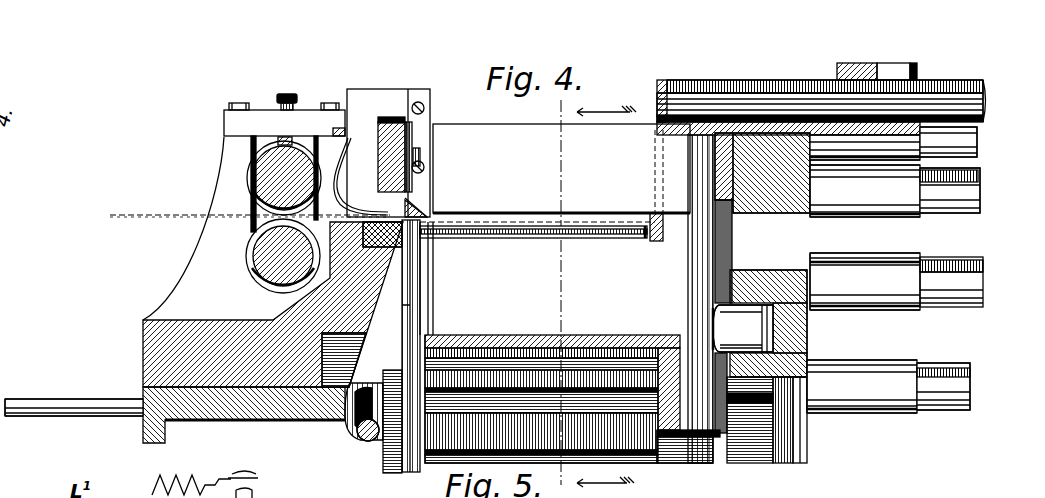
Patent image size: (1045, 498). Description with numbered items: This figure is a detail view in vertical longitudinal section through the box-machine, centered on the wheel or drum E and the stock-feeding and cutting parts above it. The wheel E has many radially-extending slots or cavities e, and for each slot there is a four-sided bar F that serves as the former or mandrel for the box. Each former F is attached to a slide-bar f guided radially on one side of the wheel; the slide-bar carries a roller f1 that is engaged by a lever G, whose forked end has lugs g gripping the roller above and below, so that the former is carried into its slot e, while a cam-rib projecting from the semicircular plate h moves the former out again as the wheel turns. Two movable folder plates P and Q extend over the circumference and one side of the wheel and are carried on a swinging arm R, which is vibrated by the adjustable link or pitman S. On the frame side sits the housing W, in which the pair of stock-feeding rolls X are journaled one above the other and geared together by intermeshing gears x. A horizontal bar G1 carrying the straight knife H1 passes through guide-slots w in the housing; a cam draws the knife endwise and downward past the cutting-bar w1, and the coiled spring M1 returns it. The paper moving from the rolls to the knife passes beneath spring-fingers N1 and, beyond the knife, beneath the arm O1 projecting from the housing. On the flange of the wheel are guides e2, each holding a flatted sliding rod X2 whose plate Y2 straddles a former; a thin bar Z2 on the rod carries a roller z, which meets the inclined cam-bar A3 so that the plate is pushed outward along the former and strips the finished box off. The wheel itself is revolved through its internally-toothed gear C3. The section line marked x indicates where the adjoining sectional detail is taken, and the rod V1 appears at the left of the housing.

In FIG. 4, the stock-feeding roll X is at (250, 237).
In FIG. 4, the frame or housing W is at (156, 355).
In FIG. 4, the swinging arm R is at (400, 377).
In FIG. 4, the link or pitman S is at (359, 438).
In FIG. 4, the rod V1 is at (60, 401).
In FIG. 4, the folder plate Q is at (420, 295).
In FIG. 4, the cutting-bar w1 is at (395, 243).
In FIG. 4, the guide-slot w is at (377, 196).
In FIG. 4, the spring-finger N1 is at (352, 144).
In FIG. 4, the horizontal bar G1 is at (412, 129).
In FIG. 4, the straight cutter or knife H1 is at (413, 138).
In FIG. 4, the arm O1 is at (424, 150).
In FIG. 4, the bar (former or mandrel) F is at (561, 168).
In FIG. 4, the intermeshing gear x is at (595, 287).
In FIG. 4, the folder plate P is at (532, 238).
In FIG. 4, the slot or cavity e is at (495, 426).
In FIG. 4, the wheel or drum E is at (728, 127).
In FIG. 4, the slide-bar f is at (703, 478).
In FIG. 4, the semicircular plate or segment h is at (790, 462).
In FIG. 4, the laterally-projecting lug g is at (807, 254).
In FIG. 4, the lever G is at (797, 337).
In FIG. 4, the roller f1 is at (743, 328).
In FIG. 4, the internally-toothed gear C3 is at (793, 193).
In FIG. 4, the inclined track or cam-bar A3 is at (933, 130).
In FIG. 4, the plate Y2 is at (658, 86).
In FIG. 4, the thin bar Z2 is at (975, 84).
In FIG. 4, the sliding rod X2 is at (981, 108).
In FIG. 4, the roller z is at (916, 78).
In FIG. 4, the guide e2 is at (775, 132).
In FIG. 5, the coiled spring M1 is at (188, 478).